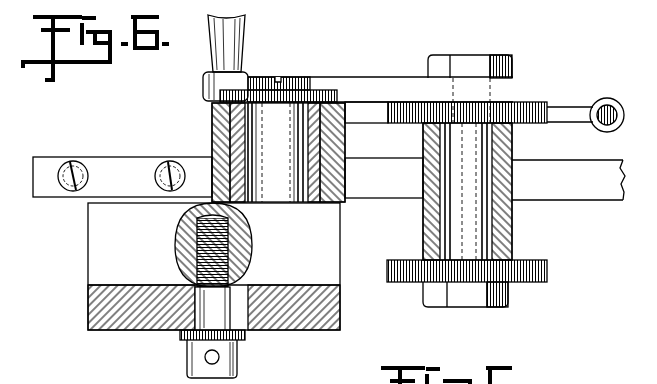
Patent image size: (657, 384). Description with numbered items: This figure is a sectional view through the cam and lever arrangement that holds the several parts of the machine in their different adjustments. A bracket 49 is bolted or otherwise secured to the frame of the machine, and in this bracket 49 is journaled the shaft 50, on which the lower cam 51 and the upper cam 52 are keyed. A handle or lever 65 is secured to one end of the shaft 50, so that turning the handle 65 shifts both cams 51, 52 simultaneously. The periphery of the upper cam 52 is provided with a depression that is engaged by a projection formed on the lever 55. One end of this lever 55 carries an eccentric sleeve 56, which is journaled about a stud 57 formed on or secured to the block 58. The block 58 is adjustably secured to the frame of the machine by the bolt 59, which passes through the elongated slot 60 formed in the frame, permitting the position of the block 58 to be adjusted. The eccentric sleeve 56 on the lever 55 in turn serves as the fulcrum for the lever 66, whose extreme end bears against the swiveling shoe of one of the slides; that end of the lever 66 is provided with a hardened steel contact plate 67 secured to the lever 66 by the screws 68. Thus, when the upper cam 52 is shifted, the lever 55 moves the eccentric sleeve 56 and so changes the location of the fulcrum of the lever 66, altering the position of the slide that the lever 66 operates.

The bracket 49 is at (511, 241).
The shaft 50 is at (467, 181).
The lower cam 51 is at (537, 283).
The upper cam 52 is at (506, 104).
The lever 55 is at (379, 117).
The eccentric sleeve 56 is at (212, 134).
The stud 57 is at (267, 192).
The block 58 is at (214, 266).
The bolt 59 is at (238, 366).
The elongated slot 60 is at (238, 322).
The handle or lever 65 is at (390, 74).
The lever 66 is at (485, 179).
The hardened steel contact plate 67 is at (122, 177).
The screws 68 is at (167, 164).